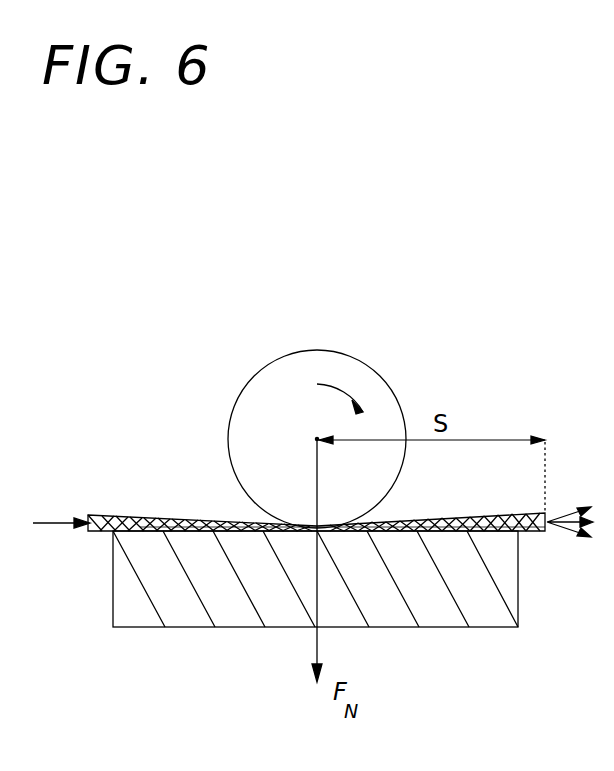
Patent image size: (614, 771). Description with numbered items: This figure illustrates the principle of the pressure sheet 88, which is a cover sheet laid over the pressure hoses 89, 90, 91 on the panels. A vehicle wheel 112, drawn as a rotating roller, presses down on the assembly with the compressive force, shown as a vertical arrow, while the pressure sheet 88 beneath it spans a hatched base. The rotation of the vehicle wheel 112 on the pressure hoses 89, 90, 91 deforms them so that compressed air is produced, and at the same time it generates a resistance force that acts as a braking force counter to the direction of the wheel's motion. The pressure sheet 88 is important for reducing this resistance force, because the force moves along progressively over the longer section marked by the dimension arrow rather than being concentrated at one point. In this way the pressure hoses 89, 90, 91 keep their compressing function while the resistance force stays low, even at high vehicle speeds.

The vehicle wheel 112 is at (272, 398).
The pressure sheet 88 is at (205, 522).
The right pressure hose 89 is at (147, 518).
The center pressure hose 90 is at (316, 522).
The left pressure hose 91 is at (316, 522).